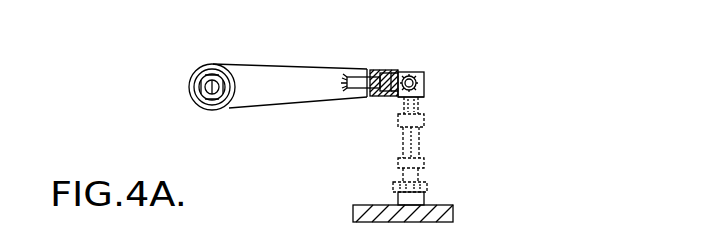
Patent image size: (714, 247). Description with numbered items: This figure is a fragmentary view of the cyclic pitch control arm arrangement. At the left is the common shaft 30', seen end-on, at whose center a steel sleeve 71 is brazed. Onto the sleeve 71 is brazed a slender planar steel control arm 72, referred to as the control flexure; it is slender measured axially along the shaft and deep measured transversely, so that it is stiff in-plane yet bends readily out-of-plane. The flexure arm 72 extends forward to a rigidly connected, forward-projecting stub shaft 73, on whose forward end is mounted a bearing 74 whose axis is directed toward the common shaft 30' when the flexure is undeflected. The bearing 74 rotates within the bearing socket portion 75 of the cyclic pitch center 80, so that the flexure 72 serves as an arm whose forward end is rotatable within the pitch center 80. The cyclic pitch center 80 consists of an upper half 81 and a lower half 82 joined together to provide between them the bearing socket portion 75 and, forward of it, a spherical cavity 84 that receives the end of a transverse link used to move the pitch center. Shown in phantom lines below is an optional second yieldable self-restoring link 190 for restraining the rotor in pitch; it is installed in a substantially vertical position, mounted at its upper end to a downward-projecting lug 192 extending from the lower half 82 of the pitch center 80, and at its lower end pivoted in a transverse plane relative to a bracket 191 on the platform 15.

The common shaft 30' is at (207, 106).
The steel sleeve 71 is at (228, 110).
The control arm 72 is at (263, 99).
The stub shaft 73 is at (376, 72).
The bearing 74 is at (394, 73).
The bearing socket portion 75 is at (387, 93).
The cyclic pitch center 80 is at (425, 82).
The upper half 81 is at (425, 85).
The lower half 82 is at (427, 98).
The spherical cavity 84 is at (417, 77).
The second yieldable self-restoring link 190 is at (444, 165).
The bracket 191 is at (395, 192).
The lug 192 is at (427, 116).
The platform 15 is at (445, 205).